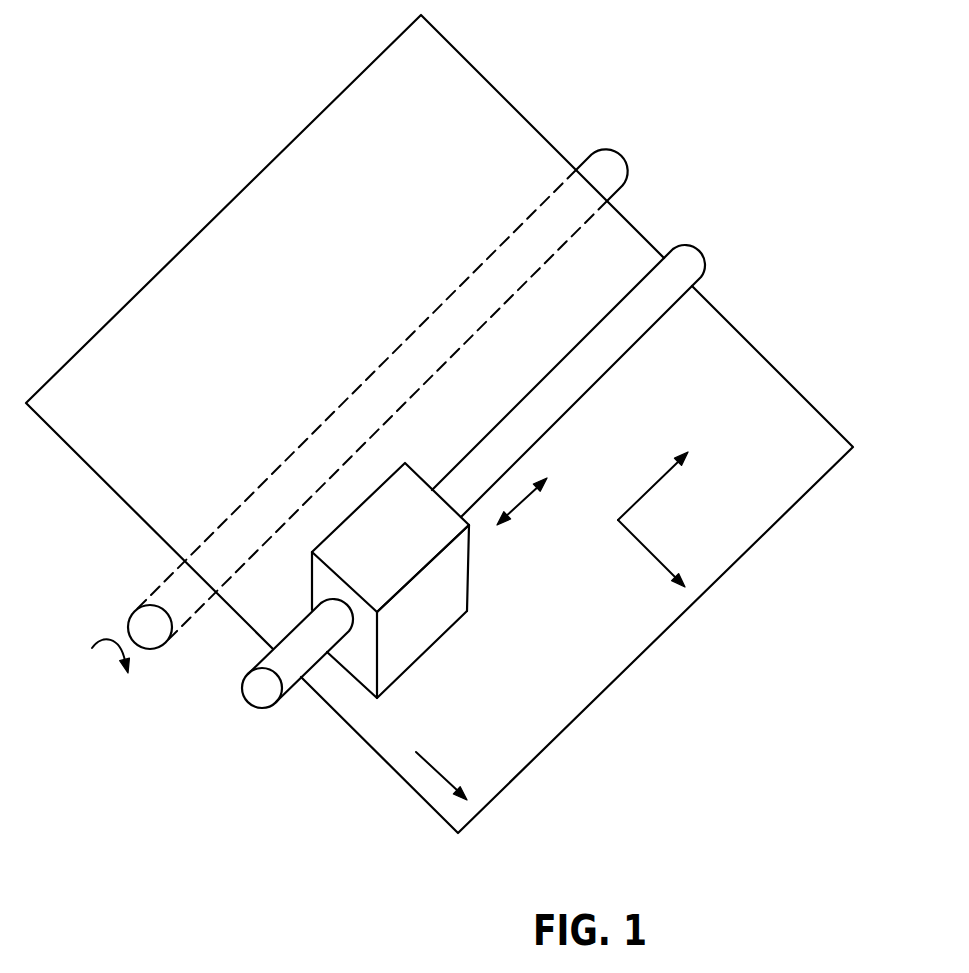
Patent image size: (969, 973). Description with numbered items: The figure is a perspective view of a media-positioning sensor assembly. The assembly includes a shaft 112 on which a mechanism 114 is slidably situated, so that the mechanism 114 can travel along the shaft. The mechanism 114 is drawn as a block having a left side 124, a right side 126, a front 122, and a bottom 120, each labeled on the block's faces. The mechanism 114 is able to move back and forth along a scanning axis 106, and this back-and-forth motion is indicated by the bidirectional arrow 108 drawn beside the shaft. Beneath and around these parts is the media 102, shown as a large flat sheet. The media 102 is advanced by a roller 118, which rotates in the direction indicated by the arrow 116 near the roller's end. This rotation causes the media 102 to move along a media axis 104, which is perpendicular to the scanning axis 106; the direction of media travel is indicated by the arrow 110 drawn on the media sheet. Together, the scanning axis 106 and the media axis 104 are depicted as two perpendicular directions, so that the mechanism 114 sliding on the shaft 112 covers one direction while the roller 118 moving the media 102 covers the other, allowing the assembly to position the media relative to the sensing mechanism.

The media 102 is at (404, 91).
The media axis 104 is at (655, 563).
The scanning axis 106 is at (652, 494).
The bidirectional arrow 108 is at (532, 497).
The arrow 110 is at (441, 770).
The shaft 112 is at (262, 706).
The mechanism 114 is at (419, 605).
The arrow 116 is at (130, 670).
The roller 118 is at (130, 621).
The bottom 120 is at (412, 670).
The front 122 is at (464, 600).
The left side 124 is at (365, 678).
The right side 126 is at (469, 560).